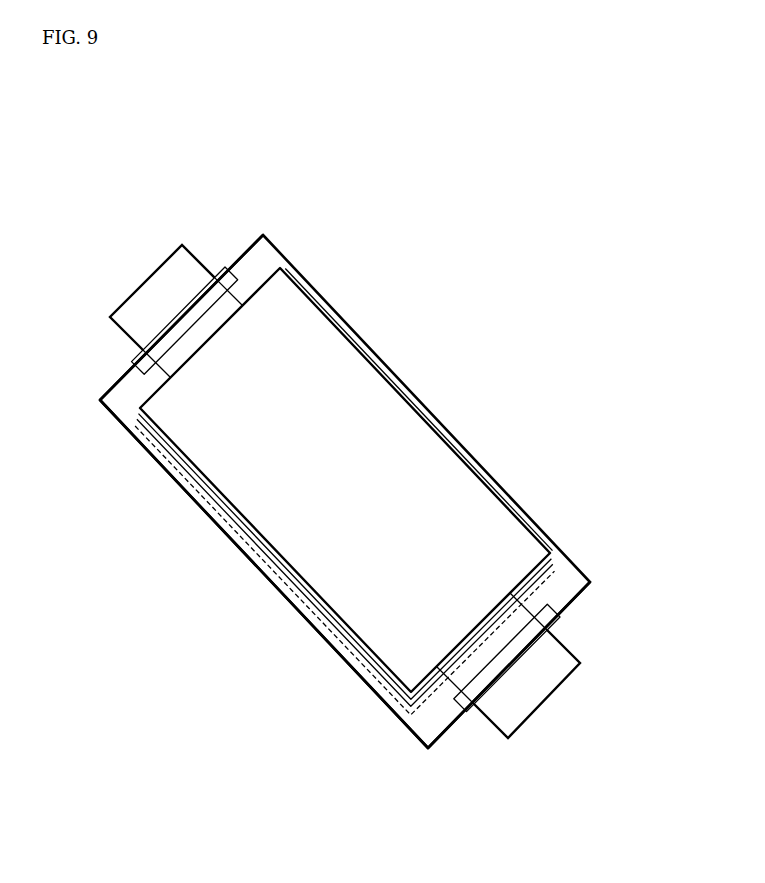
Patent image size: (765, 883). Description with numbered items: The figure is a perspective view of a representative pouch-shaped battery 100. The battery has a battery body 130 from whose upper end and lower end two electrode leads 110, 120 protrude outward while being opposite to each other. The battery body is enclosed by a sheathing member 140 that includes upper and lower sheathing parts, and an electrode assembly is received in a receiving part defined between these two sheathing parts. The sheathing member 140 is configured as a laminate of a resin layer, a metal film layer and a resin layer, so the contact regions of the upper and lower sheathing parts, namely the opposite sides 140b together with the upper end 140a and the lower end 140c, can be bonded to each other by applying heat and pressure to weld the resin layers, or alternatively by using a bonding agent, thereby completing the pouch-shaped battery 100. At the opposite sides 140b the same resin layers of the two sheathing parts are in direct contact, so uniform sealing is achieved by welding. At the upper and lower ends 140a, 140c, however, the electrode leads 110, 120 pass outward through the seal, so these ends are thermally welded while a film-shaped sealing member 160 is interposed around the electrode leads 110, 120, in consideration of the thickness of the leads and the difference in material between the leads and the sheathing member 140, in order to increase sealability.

The pouch-shaped battery 100 is at (119, 118).
The electrode lead 110 is at (158, 286).
The electrode lead 120 is at (548, 698).
The battery body 130 is at (410, 418).
The sheathing member 140 is at (580, 562).
The upper end 140a is at (263, 253).
The opposite sides 140b is at (340, 647).
The lower end 140c is at (440, 715).
The film-shaped sealing member 160 is at (562, 617).